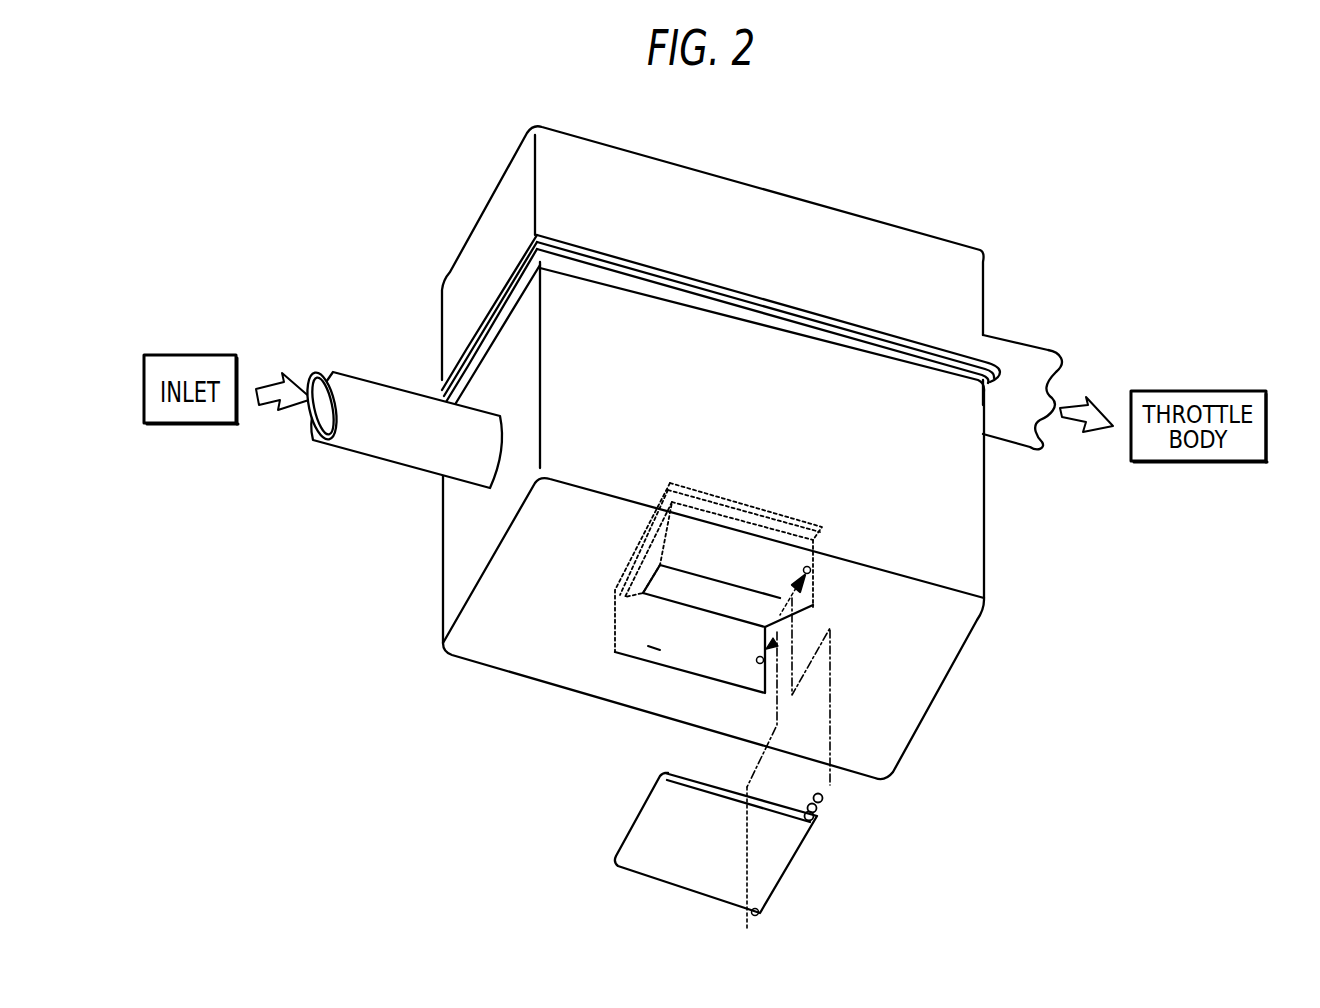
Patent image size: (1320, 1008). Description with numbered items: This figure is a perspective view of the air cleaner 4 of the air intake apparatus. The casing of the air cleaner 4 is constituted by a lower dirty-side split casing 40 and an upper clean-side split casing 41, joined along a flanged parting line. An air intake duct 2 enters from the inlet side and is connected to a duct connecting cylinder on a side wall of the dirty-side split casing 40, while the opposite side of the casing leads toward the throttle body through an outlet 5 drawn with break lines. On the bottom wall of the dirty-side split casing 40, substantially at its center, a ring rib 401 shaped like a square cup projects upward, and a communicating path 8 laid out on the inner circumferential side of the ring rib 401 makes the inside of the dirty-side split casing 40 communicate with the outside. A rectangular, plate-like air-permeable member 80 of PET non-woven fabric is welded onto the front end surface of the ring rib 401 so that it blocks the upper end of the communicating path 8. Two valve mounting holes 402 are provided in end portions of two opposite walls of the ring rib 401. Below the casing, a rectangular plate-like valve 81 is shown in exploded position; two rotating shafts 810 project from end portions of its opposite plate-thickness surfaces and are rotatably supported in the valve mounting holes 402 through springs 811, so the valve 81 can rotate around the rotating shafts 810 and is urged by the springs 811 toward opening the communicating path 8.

The air intake duct 2 is at (379, 390).
The air cleaner 4 is at (1004, 206).
The outlet duct 5 is at (1028, 348).
The communicating path 8 is at (599, 595).
The dirty-side split casing 40 is at (447, 556).
The clean-side split casing 41 is at (487, 217).
The air-permeable member 80 is at (667, 585).
The valve 81 is at (775, 870).
The ring rib 401 is at (653, 650).
The valve mounting holes 402 is at (760, 658).
The rotating shafts 810 is at (813, 814).
The springs 811 is at (822, 798).